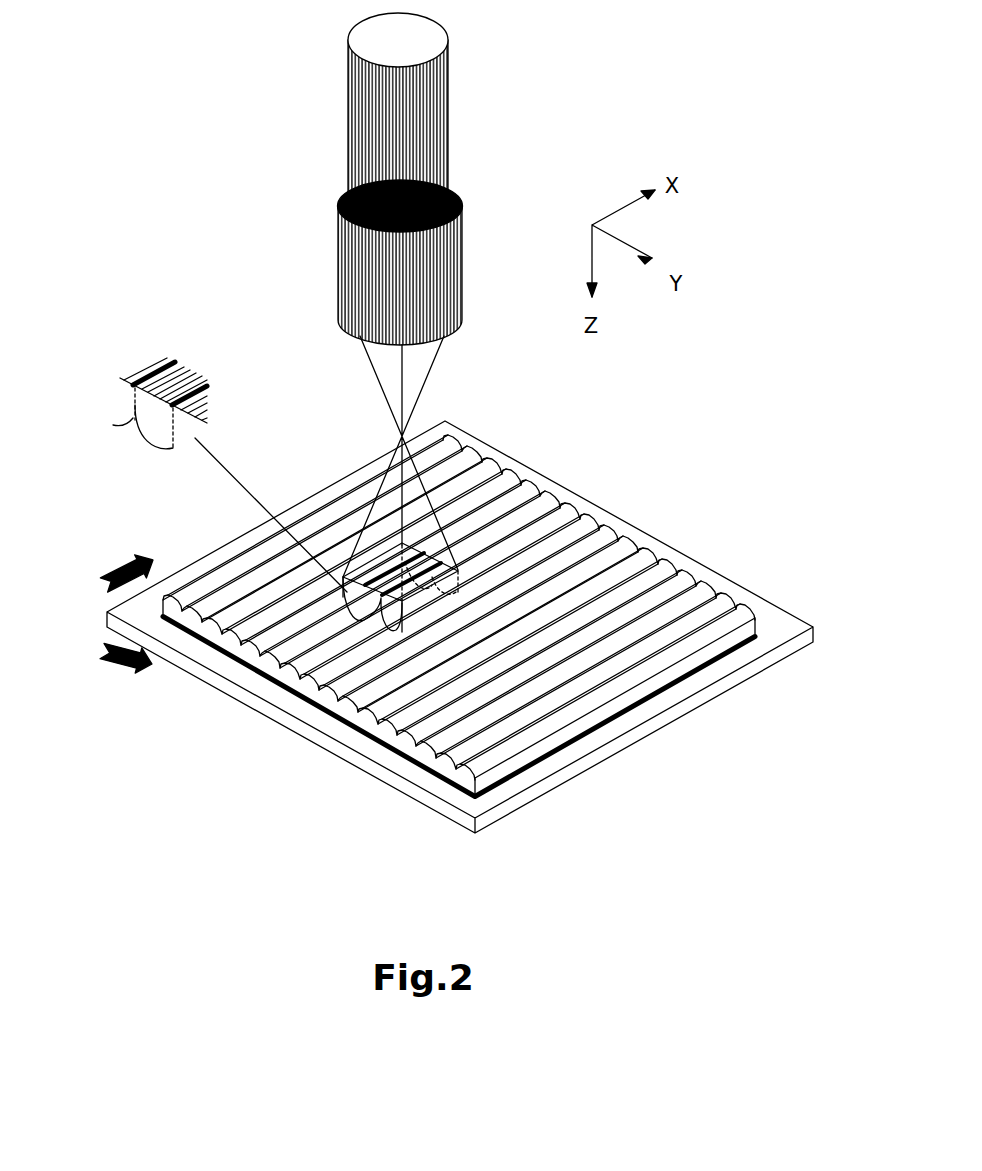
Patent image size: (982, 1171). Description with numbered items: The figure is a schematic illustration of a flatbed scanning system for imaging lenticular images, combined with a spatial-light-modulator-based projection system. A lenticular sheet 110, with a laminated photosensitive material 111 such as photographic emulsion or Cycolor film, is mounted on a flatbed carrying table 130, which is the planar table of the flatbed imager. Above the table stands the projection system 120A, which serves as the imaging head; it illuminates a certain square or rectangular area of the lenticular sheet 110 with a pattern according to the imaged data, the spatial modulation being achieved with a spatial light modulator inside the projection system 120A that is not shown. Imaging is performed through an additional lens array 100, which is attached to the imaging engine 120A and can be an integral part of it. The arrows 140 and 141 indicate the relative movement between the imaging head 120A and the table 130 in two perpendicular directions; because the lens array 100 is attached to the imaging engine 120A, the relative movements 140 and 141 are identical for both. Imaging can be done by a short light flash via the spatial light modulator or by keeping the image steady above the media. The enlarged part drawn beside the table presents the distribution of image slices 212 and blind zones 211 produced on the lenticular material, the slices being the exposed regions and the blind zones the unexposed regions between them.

The projection system 120A is at (433, 143).
The lens array 100 is at (458, 572).
The lenticular sheet 110 is at (676, 585).
The photosensitive material 111 is at (512, 777).
The flatbed carrying table 130 is at (298, 725).
The relative movement 140 is at (110, 588).
The relative movement 141 is at (116, 668).
The blind zones 211 is at (208, 390).
The image slices 212 is at (148, 370).